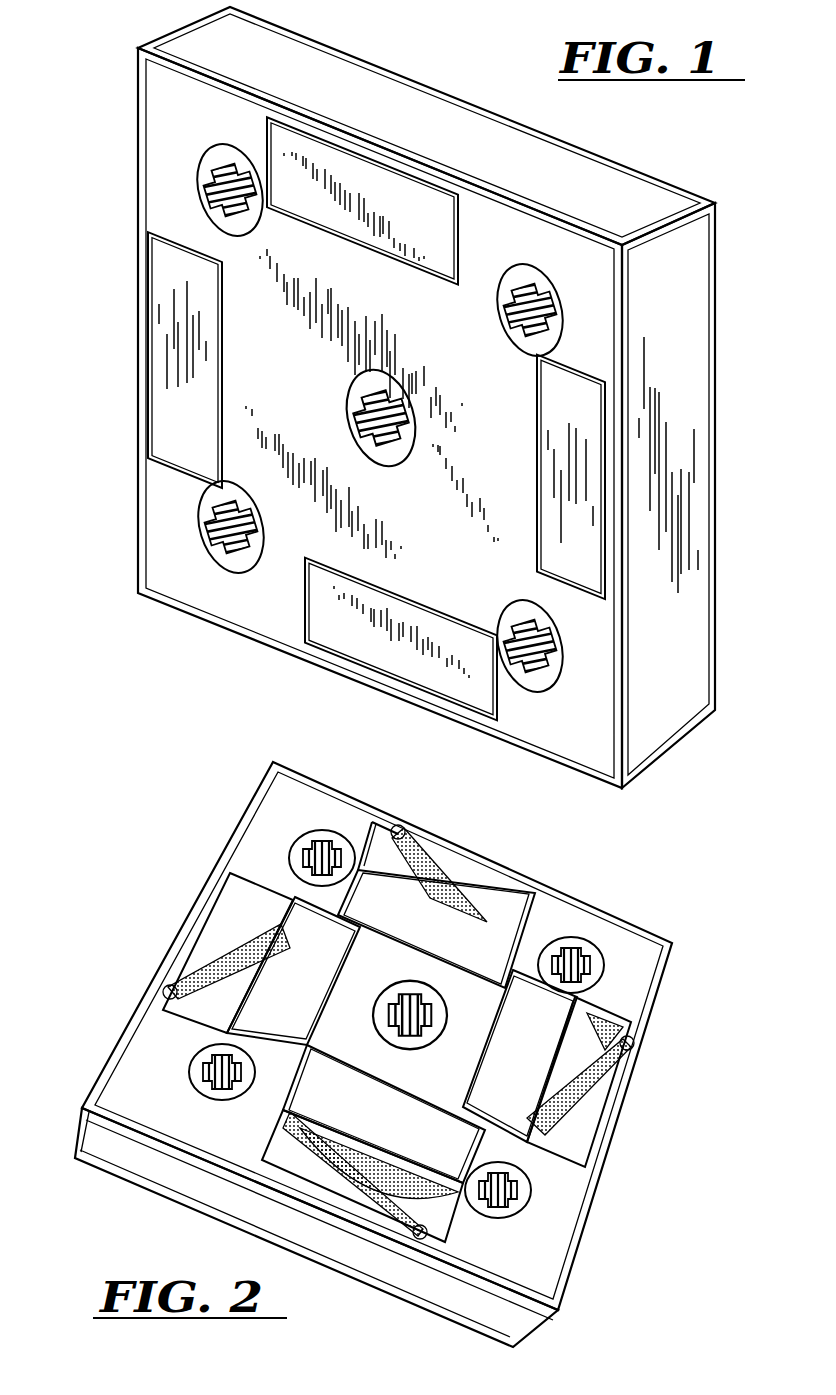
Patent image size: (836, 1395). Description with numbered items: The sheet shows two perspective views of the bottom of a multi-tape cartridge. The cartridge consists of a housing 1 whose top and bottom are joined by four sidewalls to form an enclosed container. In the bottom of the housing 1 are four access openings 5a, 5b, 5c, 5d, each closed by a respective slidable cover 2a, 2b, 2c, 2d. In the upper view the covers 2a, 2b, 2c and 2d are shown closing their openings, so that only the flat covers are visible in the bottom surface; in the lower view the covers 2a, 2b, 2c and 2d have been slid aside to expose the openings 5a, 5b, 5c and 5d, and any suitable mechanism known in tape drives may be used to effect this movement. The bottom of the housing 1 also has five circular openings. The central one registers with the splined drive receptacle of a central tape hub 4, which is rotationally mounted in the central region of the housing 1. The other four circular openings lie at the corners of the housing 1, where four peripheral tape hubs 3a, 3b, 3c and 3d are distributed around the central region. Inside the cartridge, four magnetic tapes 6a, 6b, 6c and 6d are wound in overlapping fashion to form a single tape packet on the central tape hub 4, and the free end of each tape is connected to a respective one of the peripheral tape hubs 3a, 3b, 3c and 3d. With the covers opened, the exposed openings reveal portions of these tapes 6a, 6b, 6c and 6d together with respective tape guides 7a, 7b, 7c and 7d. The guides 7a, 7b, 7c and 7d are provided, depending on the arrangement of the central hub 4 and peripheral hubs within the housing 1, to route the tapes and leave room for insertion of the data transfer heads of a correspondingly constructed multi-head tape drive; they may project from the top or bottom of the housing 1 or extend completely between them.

In FIG. 1, the housing 1 is at (296, 87).
In FIG. 2, the housing 1 is at (283, 790).
In FIG. 1, the slidable cover 2a is at (565, 435).
In FIG. 2, the slidable cover 2a is at (510, 1027).
In FIG. 1, the slidable cover 2b is at (475, 687).
In FIG. 2, the slidable cover 2b is at (385, 1097).
In FIG. 1, the slidable cover 2c is at (177, 343).
In FIG. 2, the slidable cover 2c is at (285, 1030).
In FIG. 1, the slidable cover 2d is at (397, 233).
In FIG. 2, the slidable cover 2d is at (487, 948).
In FIG. 1, the peripheral tape hub 3a is at (507, 277).
In FIG. 2, the peripheral tape hub 3a is at (588, 952).
In FIG. 1, the peripheral tape hub 3b is at (527, 608).
In FIG. 2, the peripheral tape hub 3b is at (523, 1208).
In FIG. 1, the peripheral tape hub 3c is at (197, 527).
In FIG. 2, the peripheral tape hub 3c is at (190, 1068).
In FIG. 1, the peripheral tape hub 3d is at (196, 176).
In FIG. 2, the peripheral tape hub 3d is at (308, 842).
In FIG. 1, the central tape hub 4 is at (367, 380).
In FIG. 2, the central tape hub 4 is at (382, 1002).
In FIG. 2, the opening 5a is at (567, 1140).
In FIG. 2, the opening 5b is at (277, 1157).
In FIG. 2, the opening 5c is at (237, 920).
In FIG. 2, the opening 5d is at (468, 888).
In FIG. 2, the magnetic tape 6a is at (570, 1110).
In FIG. 2, the magnetic tape 6b is at (313, 1178).
In FIG. 2, the magnetic tape 6c is at (212, 970).
In FIG. 2, the magnetic tape 6d is at (427, 862).
In FIG. 2, the tape guide 7a is at (633, 1040).
In FIG. 2, the tape guide 7b is at (418, 1237).
In FIG. 2, the tape guide 7c is at (168, 987).
In FIG. 2, the tape guide 7d is at (398, 828).